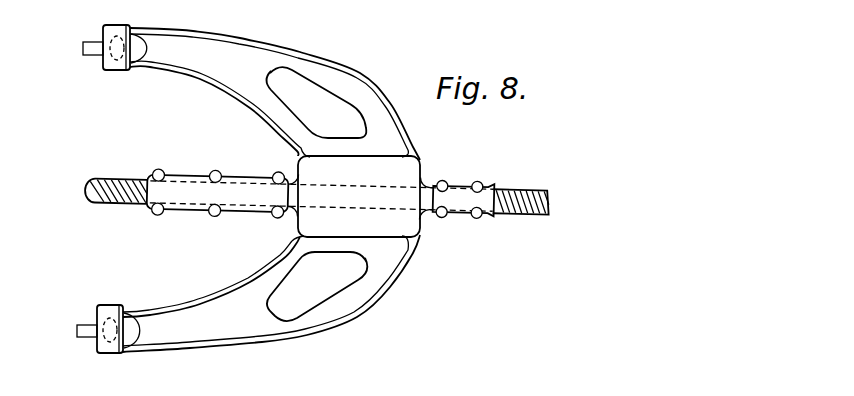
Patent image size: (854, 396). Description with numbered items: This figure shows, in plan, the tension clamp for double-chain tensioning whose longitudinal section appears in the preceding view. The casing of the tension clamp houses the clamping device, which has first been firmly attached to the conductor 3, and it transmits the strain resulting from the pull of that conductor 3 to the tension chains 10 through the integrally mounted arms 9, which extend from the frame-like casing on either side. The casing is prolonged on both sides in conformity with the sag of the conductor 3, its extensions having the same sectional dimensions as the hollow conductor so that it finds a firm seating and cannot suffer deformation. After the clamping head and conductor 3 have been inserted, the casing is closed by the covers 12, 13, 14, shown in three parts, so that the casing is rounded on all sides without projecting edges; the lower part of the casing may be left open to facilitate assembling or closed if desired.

The conductor 3 is at (136, 180).
The integrally mounted arms 9 is at (360, 76).
The tension chains 10 is at (88, 56).
The cover 12 is at (462, 214).
The cover 13 is at (411, 160).
The cover 14 is at (233, 187).